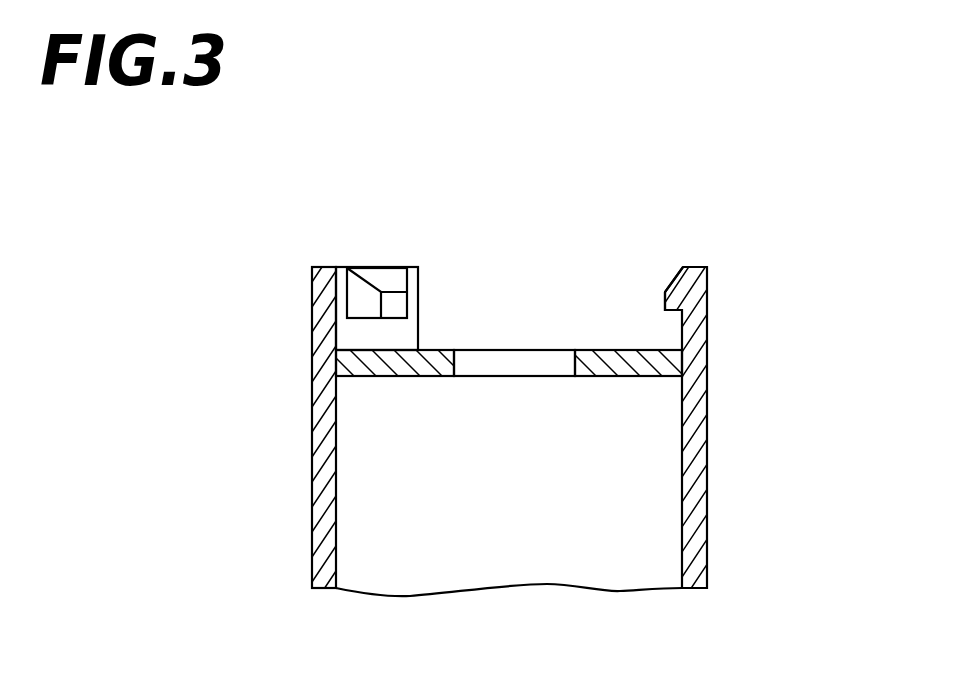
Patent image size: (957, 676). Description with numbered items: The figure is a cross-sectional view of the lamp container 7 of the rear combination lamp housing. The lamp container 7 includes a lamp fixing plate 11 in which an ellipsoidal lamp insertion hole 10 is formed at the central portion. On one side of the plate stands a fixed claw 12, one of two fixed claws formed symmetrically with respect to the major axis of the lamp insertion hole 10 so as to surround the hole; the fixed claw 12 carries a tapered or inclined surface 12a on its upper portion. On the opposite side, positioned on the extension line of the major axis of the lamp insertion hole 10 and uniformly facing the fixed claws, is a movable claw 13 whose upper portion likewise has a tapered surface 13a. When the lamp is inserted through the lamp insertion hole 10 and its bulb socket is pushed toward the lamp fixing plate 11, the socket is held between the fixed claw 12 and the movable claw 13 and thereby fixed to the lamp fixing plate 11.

The lamp container 7 is at (733, 278).
The lamp insertion hole 10 is at (508, 350).
The lamp fixing plate 11 is at (432, 350).
The fixed claw 12 is at (314, 303).
The tapered surface 12a is at (383, 282).
The movable claw 13 is at (707, 328).
The tapered surface 13a is at (673, 281).